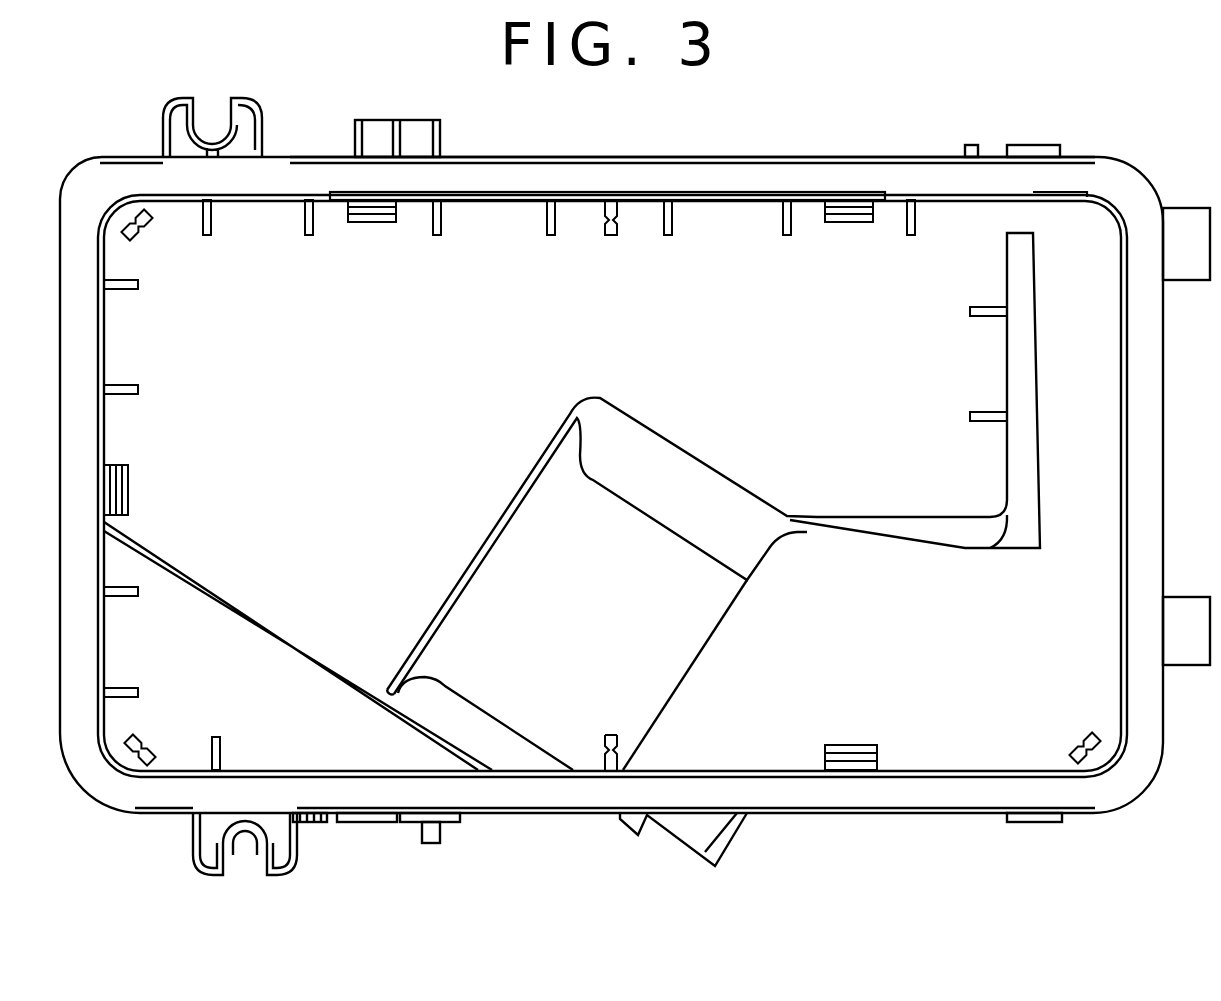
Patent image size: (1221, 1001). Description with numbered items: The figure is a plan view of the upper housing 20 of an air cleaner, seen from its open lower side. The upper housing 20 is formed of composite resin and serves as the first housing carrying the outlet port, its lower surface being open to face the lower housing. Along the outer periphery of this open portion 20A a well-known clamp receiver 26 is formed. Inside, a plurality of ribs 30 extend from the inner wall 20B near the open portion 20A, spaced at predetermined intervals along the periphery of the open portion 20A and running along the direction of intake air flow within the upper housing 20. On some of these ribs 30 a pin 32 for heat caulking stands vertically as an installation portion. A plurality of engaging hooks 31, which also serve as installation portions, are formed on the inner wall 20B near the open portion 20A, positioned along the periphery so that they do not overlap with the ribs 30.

The upper housing 20 is at (903, 153).
The open portion 20A is at (705, 172).
The inner wall 20B is at (583, 200).
The clamp receiver 26 is at (625, 157).
The rib 30 is at (308, 234).
The engaging hook 31 is at (372, 222).
The pin 32 is at (140, 238).